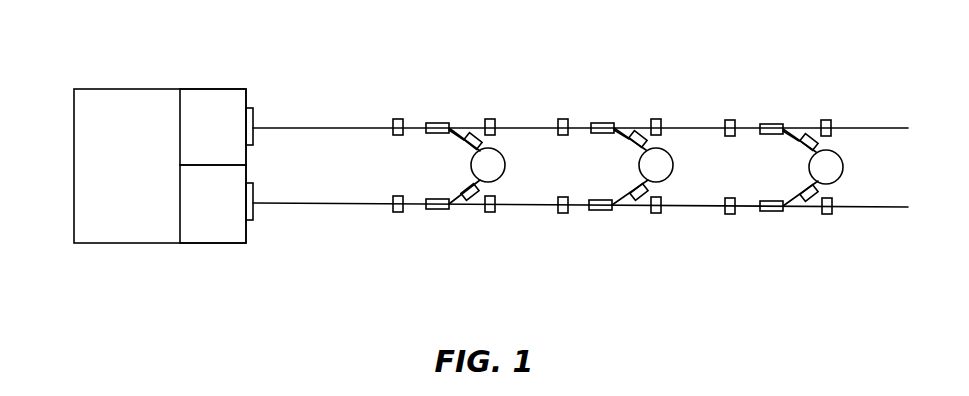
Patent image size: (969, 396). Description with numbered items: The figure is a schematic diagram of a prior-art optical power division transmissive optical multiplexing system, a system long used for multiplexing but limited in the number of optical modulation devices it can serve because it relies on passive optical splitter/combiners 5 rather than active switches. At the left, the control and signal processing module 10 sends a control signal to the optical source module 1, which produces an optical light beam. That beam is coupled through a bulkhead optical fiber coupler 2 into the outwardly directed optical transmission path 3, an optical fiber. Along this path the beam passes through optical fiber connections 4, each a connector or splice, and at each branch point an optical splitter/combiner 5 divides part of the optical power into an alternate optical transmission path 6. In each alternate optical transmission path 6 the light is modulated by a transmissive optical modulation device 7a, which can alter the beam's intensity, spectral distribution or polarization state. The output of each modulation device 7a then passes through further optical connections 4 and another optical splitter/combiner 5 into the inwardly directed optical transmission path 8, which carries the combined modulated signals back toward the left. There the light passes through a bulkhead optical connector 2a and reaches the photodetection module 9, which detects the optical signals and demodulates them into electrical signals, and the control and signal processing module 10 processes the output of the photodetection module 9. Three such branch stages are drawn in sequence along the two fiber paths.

The optical source module 1 is at (217, 107).
The bulkhead optical fiber coupler 2 is at (251, 108).
The bulkhead optical connector 2a is at (250, 220).
The outwardly directed optical transmission path 3 is at (326, 117).
The optical fiber connection 4 is at (398, 119).
The optical splitter/combiner 5 is at (436, 123).
The alternate optical transmission path 6 is at (455, 137).
The transmissive optical modulation device 7a is at (496, 169).
The inwardly directed optical transmission path 8 is at (352, 210).
The photodetection module 9 is at (207, 230).
The control and signal processing module 10 is at (125, 217).